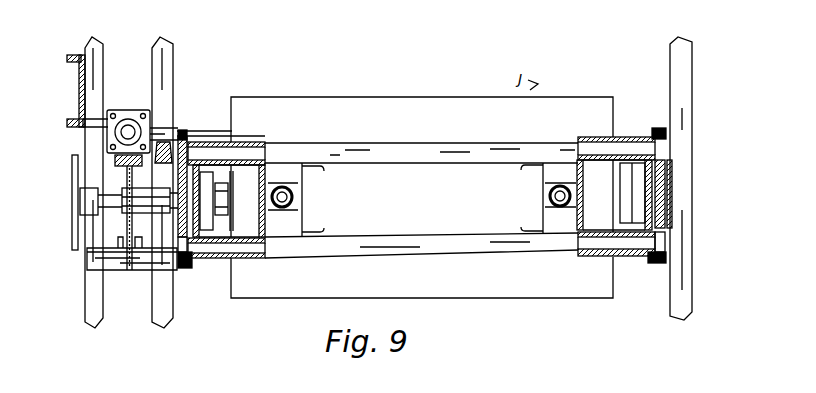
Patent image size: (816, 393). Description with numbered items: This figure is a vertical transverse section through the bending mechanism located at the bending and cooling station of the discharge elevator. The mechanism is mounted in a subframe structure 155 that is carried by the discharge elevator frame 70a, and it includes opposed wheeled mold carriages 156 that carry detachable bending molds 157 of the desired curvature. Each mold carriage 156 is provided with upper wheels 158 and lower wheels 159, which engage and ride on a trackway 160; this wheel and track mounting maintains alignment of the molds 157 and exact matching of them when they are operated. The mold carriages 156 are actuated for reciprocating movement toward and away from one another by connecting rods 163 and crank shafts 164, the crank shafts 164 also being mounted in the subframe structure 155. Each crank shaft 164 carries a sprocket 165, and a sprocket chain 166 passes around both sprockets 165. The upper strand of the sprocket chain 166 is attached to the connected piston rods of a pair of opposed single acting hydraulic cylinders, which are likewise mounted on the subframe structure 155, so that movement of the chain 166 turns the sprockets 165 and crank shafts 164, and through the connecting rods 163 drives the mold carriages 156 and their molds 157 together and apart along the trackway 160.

The discharge elevator frame 70a is at (692, 55).
The subframe structure 155 is at (678, 190).
The mold carriage 156 is at (421, 200).
The bending mold 157 is at (405, 89).
The upper wheel 158 is at (199, 138).
The lower wheel 159 is at (190, 266).
The trackway 160 is at (213, 212).
The connecting rod 163 is at (296, 197).
The crank shaft 164 is at (222, 197).
The sprocket 165 is at (78, 200).
The sprocket chain 166 is at (130, 262).